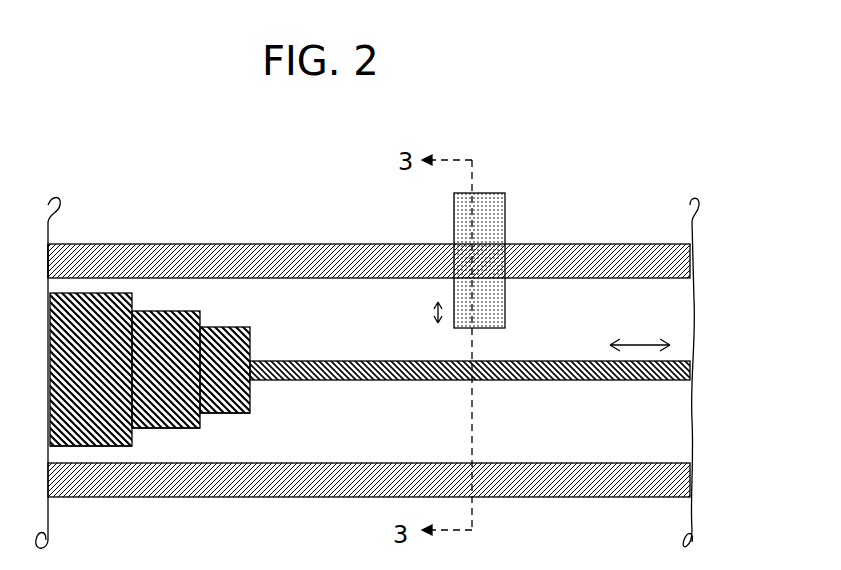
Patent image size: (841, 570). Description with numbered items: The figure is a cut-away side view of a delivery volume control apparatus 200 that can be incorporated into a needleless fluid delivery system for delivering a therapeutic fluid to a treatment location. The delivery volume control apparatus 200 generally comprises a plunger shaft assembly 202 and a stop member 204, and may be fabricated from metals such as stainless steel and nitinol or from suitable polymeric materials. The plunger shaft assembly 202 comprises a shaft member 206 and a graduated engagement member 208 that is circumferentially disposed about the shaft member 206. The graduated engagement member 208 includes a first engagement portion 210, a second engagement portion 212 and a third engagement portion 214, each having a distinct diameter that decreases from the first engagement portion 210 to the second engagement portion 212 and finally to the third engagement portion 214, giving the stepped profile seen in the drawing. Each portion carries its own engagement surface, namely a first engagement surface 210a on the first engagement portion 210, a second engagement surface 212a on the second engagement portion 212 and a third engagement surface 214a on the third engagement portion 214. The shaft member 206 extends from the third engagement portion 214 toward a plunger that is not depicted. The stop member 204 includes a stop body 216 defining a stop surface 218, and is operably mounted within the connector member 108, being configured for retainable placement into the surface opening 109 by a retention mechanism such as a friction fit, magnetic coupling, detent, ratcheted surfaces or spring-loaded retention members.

The delivery volume control apparatus 200 is at (546, 82).
The connector member 108 is at (346, 256).
The surface opening 109 is at (454, 244).
The plunger shaft assembly 202 is at (292, 361).
The stop member 204 is at (505, 193).
The shaft member 206 is at (541, 361).
The graduated engagement member 208 is at (158, 315).
The first engagement portion 210 is at (67, 291).
The second engagement portion 212 is at (180, 311).
The third engagement portion 214 is at (233, 327).
The first engagement surface 210a is at (132, 438).
The second engagement surface 212a is at (200, 420).
The third engagement surface 214a is at (258, 400).
The stop body 216 is at (496, 227).
The stop surface 218 is at (454, 290).